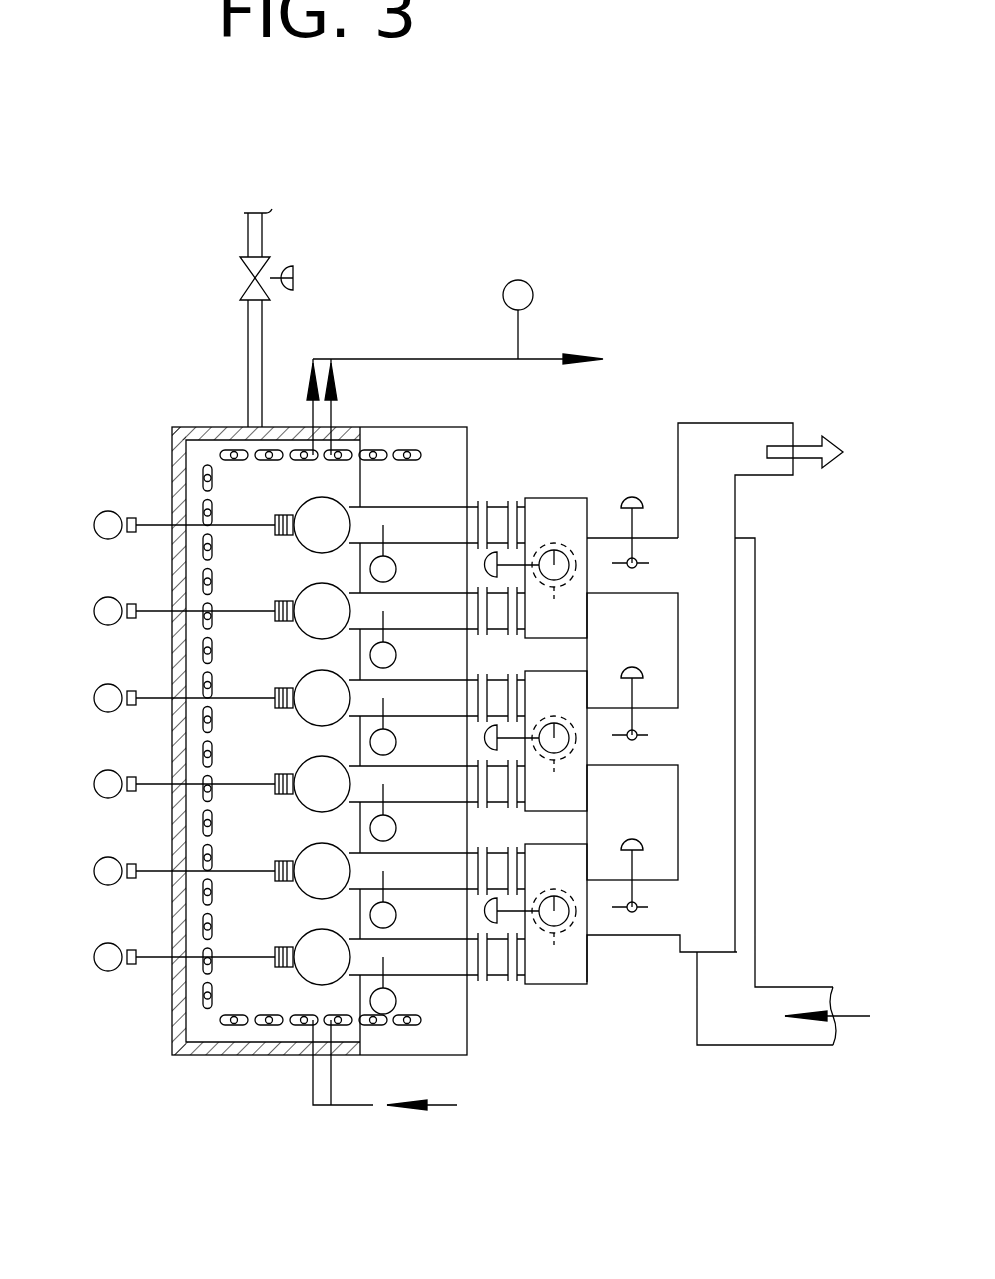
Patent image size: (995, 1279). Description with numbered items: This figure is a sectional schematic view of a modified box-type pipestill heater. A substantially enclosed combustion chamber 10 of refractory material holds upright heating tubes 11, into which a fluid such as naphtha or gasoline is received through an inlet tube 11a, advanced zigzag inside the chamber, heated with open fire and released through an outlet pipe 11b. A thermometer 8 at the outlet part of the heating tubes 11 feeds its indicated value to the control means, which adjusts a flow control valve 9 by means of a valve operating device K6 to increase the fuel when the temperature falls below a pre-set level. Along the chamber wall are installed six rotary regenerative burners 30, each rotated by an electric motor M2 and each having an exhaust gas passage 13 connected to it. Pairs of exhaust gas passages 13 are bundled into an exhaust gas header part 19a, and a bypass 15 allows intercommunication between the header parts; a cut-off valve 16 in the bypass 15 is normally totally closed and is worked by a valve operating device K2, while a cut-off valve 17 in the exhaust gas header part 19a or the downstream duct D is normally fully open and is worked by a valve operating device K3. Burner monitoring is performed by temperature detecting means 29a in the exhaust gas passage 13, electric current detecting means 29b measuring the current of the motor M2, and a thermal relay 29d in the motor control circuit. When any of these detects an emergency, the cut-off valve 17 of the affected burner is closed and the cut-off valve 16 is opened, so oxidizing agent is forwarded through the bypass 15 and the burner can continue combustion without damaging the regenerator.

The thermometer 8 is at (533, 295).
The flow control valve 9 is at (240, 272).
The valve operating device K6 is at (306, 278).
The combustion chamber 10 is at (178, 426).
The heating tubes 11 is at (187, 523).
The inlet tube 11a is at (352, 1110).
The outlet pipe 11b is at (420, 359).
The exhaust gas passage 13 is at (377, 507).
The bypass 15 is at (554, 758).
The cut-off valve 16 is at (556, 541).
The cut-off valve 17 is at (647, 555).
The exhaust gas header part 19a is at (561, 495).
The temperature detecting means 29a is at (396, 566).
The electric current detecting means 29b is at (94, 525).
The thermal relay 29d is at (131, 533).
The rotary regenerative burner 30 is at (306, 538).
The duct D is at (605, 538).
The valve operating device K2 is at (483, 564).
The valve operating device K3 is at (638, 495).
The electric motor M2 is at (281, 515).